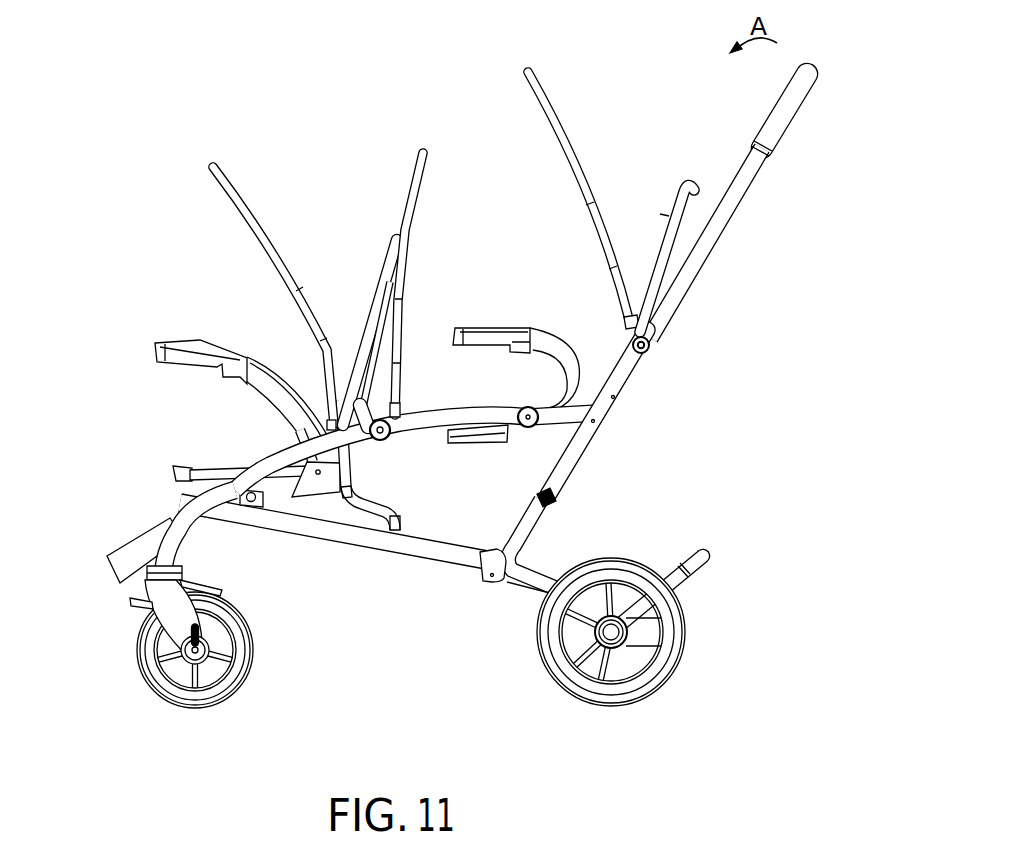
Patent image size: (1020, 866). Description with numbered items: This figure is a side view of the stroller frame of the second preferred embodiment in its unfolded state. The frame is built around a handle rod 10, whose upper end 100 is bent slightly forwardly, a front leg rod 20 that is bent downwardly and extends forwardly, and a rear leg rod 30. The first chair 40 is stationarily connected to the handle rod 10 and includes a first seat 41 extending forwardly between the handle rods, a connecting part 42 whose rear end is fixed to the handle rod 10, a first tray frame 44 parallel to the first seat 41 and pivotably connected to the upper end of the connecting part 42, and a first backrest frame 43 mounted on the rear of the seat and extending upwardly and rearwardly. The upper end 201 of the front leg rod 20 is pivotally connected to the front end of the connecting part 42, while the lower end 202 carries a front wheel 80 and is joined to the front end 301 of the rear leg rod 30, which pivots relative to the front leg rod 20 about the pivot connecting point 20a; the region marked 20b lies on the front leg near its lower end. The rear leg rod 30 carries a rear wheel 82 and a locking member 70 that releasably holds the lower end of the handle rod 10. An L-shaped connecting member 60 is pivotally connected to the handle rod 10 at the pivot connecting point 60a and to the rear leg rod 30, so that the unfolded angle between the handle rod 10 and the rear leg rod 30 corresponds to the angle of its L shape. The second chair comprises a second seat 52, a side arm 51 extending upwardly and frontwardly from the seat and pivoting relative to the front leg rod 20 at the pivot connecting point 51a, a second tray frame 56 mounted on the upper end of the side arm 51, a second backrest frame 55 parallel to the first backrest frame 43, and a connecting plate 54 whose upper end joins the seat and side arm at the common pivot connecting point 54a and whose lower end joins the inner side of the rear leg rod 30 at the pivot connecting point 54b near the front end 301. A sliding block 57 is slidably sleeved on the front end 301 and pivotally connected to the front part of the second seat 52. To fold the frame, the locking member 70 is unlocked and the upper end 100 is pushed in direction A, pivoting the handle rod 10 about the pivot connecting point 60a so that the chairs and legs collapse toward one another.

The handle rod 10 is at (745, 181).
The upper end of the handle rod 100 is at (793, 108).
The front leg rod 20 is at (419, 419).
The pivot connecting point 20a is at (548, 410).
The front leg of upper frame tube 20b is at (235, 489).
The upper end of the front leg rod 201 is at (504, 412).
The lower end of the front leg rod 202 is at (118, 566).
The rear leg rod 30 is at (425, 548).
The front end of the rear leg rod 301 is at (277, 500).
The first chair 40 is at (600, 384).
The first seat 41 is at (481, 437).
The connecting part 42 is at (552, 433).
The first backrest frame 43 is at (634, 297).
The first tray frame 44 is at (494, 330).
The side arm 51 is at (333, 474).
The pivot connecting point 51a is at (315, 452).
The second seat 52 is at (187, 470).
The connecting plate 54 is at (347, 512).
The pivot connecting point 54a is at (344, 497).
The pivot connecting point 54b is at (352, 528).
The second backrest frame 55 is at (363, 335).
The second tray frame 56 is at (200, 342).
The sliding block 57 is at (247, 504).
The connecting member 60 is at (520, 575).
The pivot connecting point 60a is at (554, 501).
The locking member 70 is at (493, 575).
The front wheel 80 is at (196, 690).
The rear wheel 82 is at (608, 692).